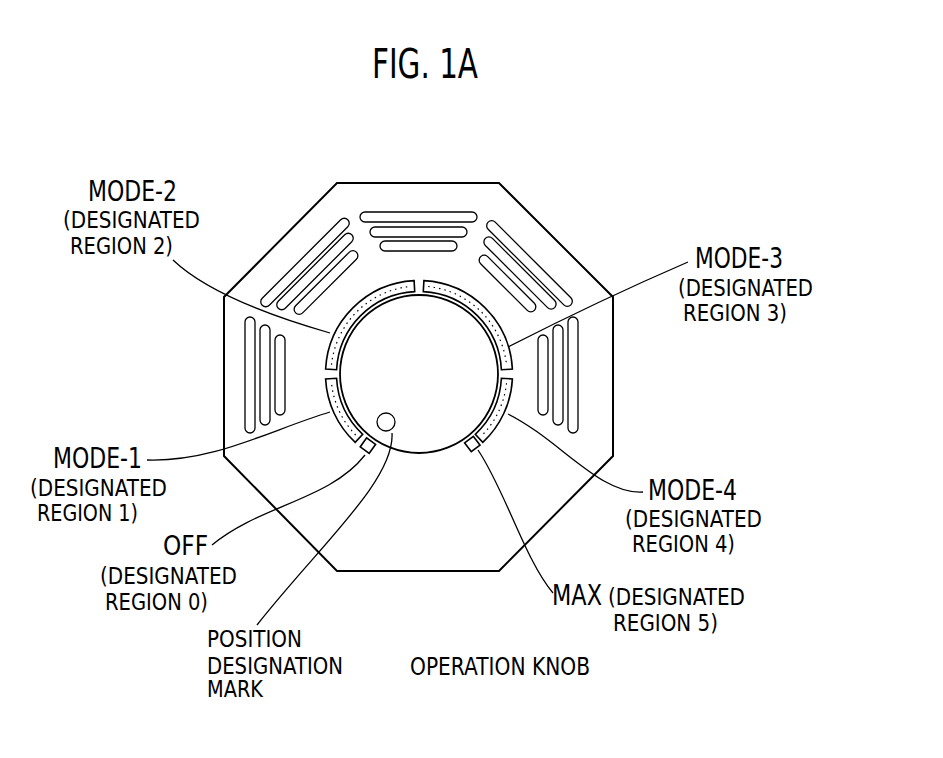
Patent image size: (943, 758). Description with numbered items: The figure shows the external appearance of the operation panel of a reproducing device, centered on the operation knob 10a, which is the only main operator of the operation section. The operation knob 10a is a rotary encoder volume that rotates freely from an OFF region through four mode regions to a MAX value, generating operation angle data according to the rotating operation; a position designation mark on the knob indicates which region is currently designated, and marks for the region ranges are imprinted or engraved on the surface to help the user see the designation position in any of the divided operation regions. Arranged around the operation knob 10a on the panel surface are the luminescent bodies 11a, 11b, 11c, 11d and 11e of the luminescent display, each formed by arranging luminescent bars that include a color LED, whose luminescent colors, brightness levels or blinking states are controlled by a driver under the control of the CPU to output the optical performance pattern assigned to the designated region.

The operation knob 10a is at (417, 438).
The luminescent body 11a is at (250, 362).
The luminescent body 11b is at (307, 252).
The luminescent body 11c is at (444, 216).
The luminescent body 11d is at (527, 258).
The luminescent body 11e is at (578, 365).